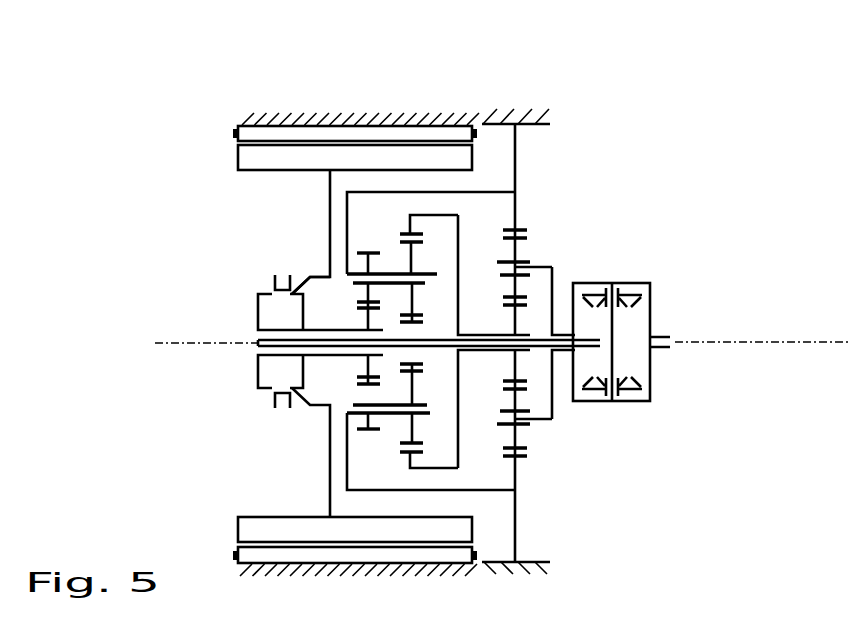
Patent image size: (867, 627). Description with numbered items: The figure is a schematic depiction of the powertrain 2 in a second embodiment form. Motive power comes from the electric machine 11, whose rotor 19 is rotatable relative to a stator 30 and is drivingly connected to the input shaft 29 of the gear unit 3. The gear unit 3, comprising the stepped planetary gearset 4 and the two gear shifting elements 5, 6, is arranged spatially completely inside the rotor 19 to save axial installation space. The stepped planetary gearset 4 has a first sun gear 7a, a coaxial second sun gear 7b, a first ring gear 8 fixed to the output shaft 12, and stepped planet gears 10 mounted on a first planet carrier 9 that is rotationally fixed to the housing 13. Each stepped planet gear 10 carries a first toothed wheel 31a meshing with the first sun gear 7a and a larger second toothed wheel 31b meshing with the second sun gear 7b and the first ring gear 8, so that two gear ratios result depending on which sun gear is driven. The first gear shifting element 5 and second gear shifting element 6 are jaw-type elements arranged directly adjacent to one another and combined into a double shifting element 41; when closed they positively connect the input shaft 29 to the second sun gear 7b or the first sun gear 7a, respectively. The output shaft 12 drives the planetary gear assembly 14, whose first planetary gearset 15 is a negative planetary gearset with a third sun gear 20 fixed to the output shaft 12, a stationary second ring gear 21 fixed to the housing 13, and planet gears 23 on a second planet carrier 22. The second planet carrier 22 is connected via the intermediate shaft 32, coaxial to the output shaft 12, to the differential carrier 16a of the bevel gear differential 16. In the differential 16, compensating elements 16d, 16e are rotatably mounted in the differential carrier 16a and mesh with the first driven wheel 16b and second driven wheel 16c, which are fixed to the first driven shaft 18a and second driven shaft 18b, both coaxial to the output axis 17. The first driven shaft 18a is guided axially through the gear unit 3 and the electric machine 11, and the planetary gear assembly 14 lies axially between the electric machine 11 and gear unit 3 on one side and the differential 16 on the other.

The powertrain 2 is at (762, 245).
The gear unit 3 is at (493, 168).
The stepped planetary gearset 4 is at (361, 448).
The first gear shifting element 5 is at (259, 289).
The second gear shifting element 6 is at (303, 268).
The first sun gear 7a is at (360, 373).
The second sun gear 7b is at (421, 357).
The first ring gear 8 is at (405, 454).
The first planet carrier 9 is at (414, 258).
The stepped planet gear 10 is at (389, 268).
The electric machine 11 is at (383, 102).
The output shaft 12 is at (481, 352).
The housing 13 is at (530, 123).
The planetary gear assembly 14 is at (515, 575).
The first planetary gearset 15 is at (537, 472).
The differential 16 is at (669, 323).
The differential carrier 16a is at (600, 283).
The first driven wheel 16b is at (587, 358).
The second driven wheel 16c is at (640, 313).
The compensating element 16d is at (628, 292).
The compensating element 16e is at (628, 388).
The output axis 17 is at (762, 382).
The first driven shaft 18a is at (252, 344).
The second driven shaft 18b is at (675, 340).
The rotor 19 is at (265, 155).
The third sun gear 20 is at (510, 305).
The second ring gear 21 is at (520, 231).
The second planet carrier 22 is at (541, 262).
The planet gear 23 is at (518, 435).
The input shaft 29 is at (319, 277).
The stator 30 is at (279, 136).
The first toothed wheel 31a is at (360, 251).
The second toothed wheel 31b is at (433, 276).
The intermediate shaft 32 is at (560, 333).
The double shifting element 41 is at (280, 266).